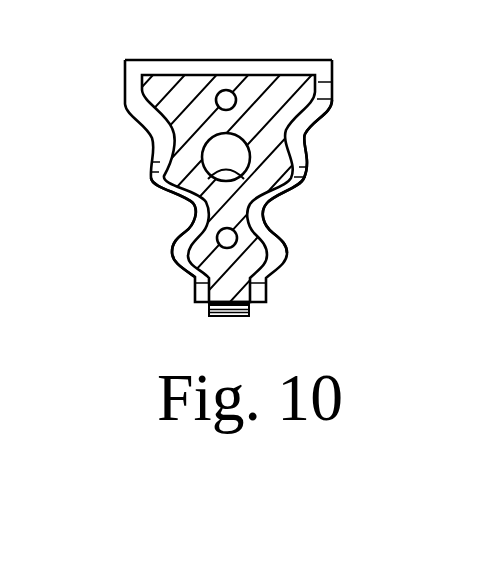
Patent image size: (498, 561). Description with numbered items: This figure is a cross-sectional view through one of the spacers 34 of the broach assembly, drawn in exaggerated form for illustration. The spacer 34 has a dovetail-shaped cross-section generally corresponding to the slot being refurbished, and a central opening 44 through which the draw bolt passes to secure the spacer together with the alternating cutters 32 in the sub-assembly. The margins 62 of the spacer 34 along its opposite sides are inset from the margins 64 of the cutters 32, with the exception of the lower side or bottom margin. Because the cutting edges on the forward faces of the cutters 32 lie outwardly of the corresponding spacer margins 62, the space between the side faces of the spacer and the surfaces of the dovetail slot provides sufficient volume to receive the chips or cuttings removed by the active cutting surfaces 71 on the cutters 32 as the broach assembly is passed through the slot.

The cutter 32 is at (142, 135).
The spacer 34 is at (183, 92).
The central opening 44 is at (172, 196).
The margins of the spacer 62 is at (307, 124).
The margins of the cutters 64 is at (302, 192).
The active cutting surfaces 71 is at (178, 221).